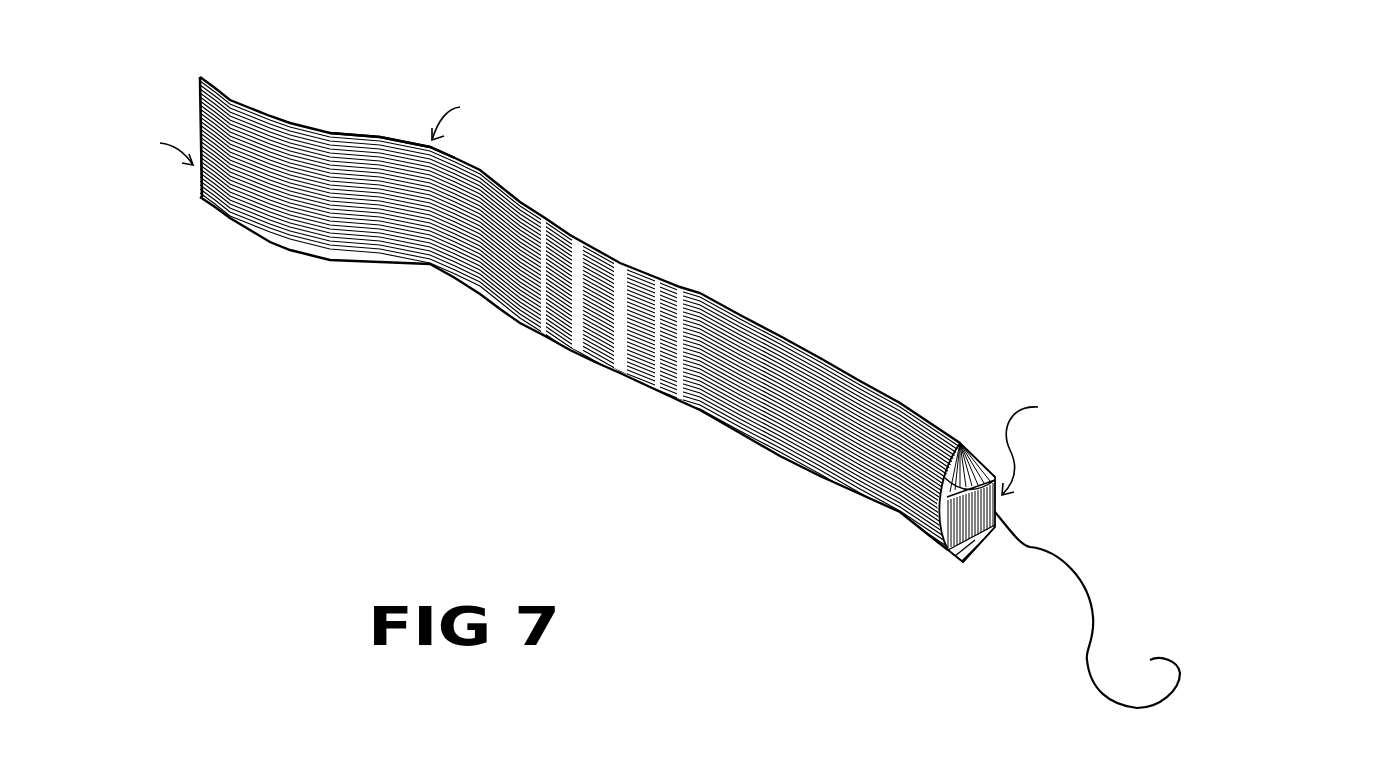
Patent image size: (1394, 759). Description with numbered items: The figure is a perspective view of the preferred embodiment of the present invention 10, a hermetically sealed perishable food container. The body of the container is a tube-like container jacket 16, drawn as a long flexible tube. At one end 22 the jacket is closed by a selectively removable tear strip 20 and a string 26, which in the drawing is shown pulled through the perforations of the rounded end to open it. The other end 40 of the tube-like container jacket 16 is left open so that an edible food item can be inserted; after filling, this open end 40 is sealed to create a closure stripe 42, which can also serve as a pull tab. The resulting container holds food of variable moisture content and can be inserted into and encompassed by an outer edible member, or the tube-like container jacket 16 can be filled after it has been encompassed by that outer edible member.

The present invention 10 is at (722, 373).
The tube-like container jacket 16 is at (703, 292).
The selectively removable tear strip 20 is at (938, 518).
The closed end 22 is at (957, 553).
The string 26 is at (1098, 697).
The open end 40 is at (202, 175).
The closure stripe 42 is at (390, 140).